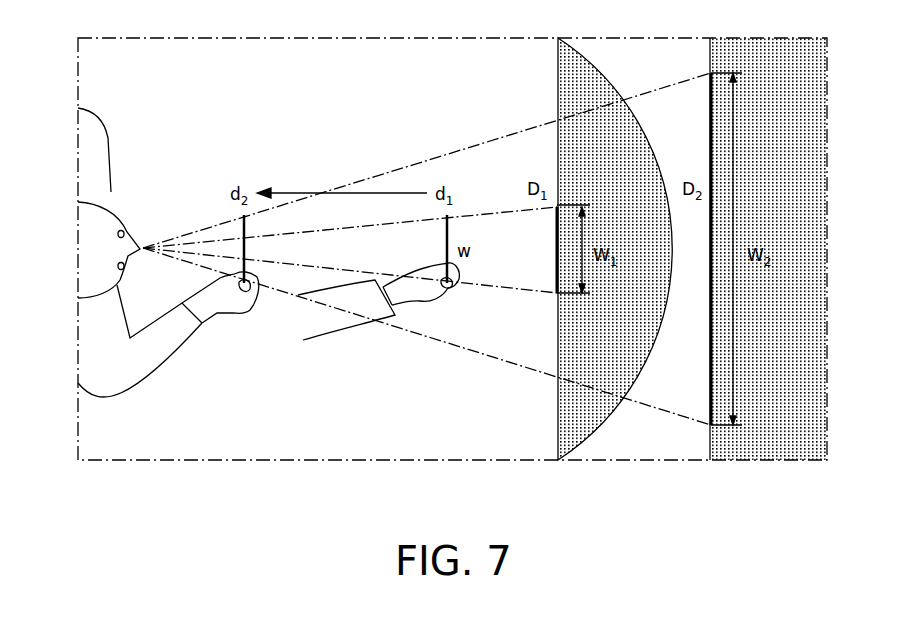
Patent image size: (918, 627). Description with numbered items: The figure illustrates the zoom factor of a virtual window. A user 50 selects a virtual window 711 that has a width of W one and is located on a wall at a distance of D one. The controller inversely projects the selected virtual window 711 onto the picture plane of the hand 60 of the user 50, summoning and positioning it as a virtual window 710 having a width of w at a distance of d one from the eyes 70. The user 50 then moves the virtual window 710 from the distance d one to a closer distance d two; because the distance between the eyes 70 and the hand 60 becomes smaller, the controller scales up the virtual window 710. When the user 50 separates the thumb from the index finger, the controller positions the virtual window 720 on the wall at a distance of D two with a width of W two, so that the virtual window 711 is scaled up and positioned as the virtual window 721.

The user 50 is at (88, 145).
The eyes 70 is at (117, 232).
The hand 60 is at (227, 298).
The virtual window 710 is at (449, 232).
The virtual window 720 is at (240, 222).
The virtual window 711 is at (557, 270).
The virtual window 721 is at (710, 392).